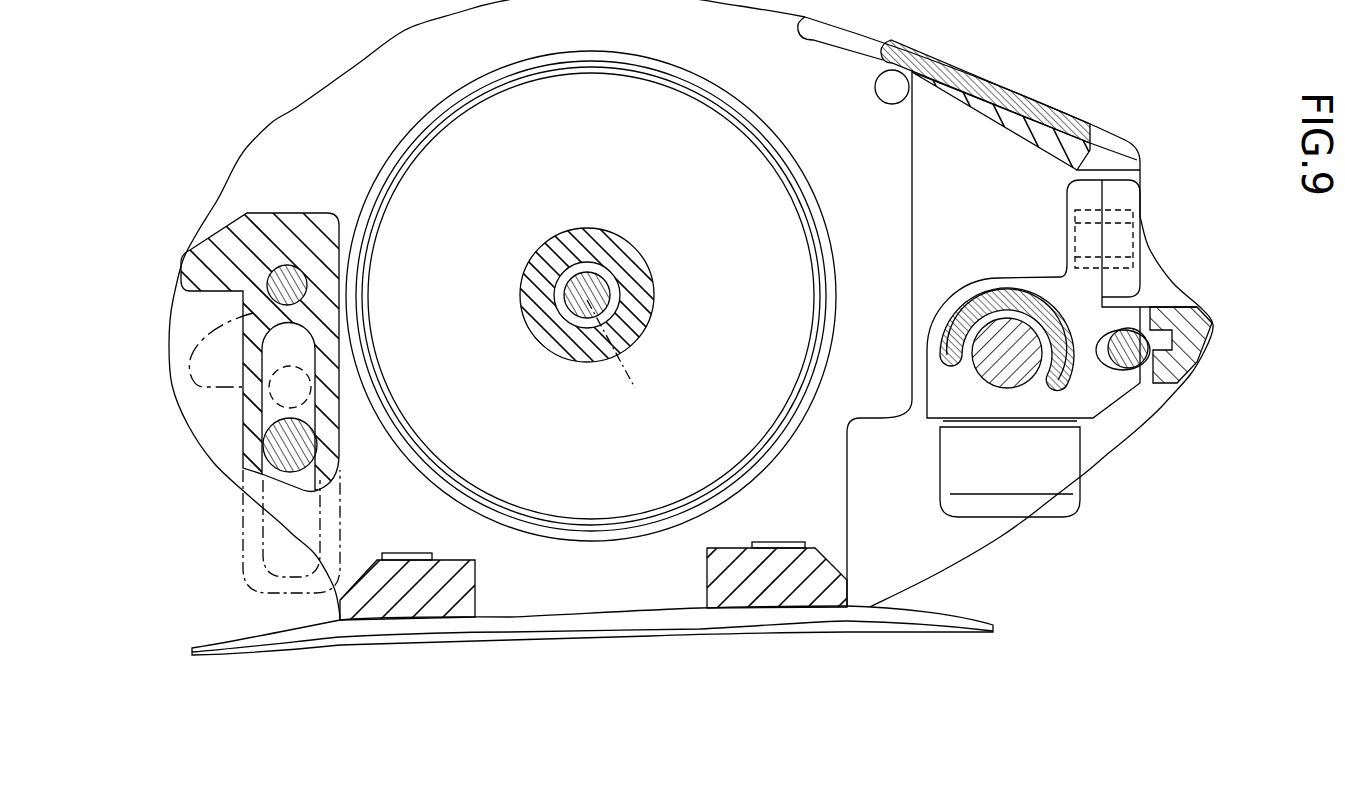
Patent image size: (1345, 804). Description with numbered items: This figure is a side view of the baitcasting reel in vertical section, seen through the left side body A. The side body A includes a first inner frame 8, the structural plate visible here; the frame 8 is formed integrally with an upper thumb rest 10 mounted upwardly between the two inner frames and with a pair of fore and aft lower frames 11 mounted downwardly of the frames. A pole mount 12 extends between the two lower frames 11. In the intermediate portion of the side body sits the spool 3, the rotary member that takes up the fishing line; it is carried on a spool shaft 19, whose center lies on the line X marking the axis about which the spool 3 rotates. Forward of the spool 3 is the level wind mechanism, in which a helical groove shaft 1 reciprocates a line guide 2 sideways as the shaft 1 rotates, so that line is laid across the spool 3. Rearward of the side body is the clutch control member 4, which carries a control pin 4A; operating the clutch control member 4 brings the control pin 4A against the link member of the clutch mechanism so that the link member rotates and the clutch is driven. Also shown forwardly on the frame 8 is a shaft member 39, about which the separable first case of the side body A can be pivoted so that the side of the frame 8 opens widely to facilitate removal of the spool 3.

The left side body A is at (273, 119).
The first inner frame 8 is at (337, 85).
The spool 3 is at (780, 213).
The spool shaft 19 is at (600, 288).
The axis X is at (620, 363).
The clutch control member 4 is at (310, 220).
The control pin 4A is at (278, 266).
The upper thumb rest 10 is at (1007, 87).
The line guide 2 is at (963, 297).
The helical groove shaft 1 is at (1006, 322).
The shaft member 39 is at (1122, 370).
The lower frames 11 is at (463, 587).
The pole mount 12 is at (613, 637).